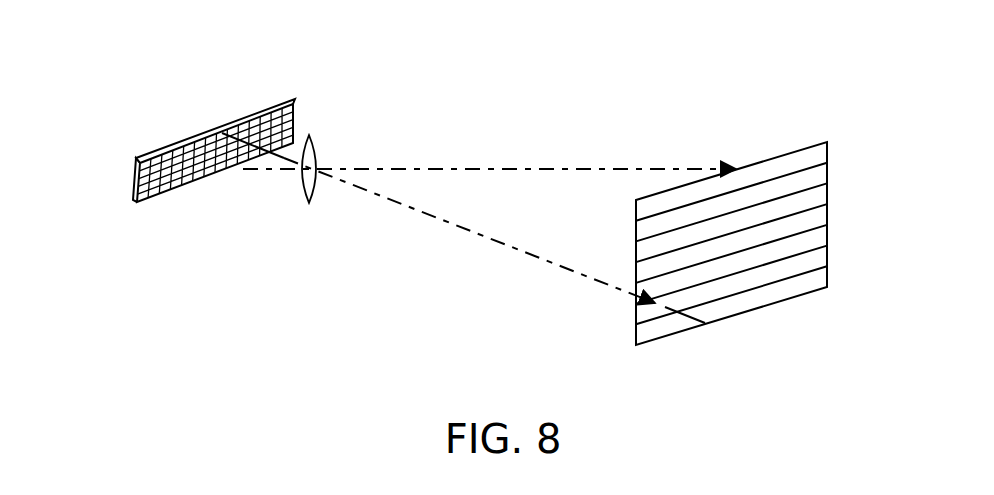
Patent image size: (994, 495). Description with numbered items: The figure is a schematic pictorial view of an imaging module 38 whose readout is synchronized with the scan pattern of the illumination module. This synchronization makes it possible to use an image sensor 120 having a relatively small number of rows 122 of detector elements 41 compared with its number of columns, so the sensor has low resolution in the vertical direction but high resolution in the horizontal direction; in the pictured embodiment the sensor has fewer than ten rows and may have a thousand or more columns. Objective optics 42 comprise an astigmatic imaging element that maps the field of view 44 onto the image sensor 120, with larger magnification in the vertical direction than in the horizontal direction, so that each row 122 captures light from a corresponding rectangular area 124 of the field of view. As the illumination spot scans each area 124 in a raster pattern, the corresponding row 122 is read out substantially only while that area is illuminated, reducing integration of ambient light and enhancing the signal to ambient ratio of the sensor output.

The imaging module 38 is at (186, 76).
The image sensor 120 is at (258, 110).
The rows 122 is at (133, 186).
The detector elements 41 is at (297, 109).
The objective optics 42 is at (317, 194).
The field of view 44 is at (557, 169).
The rectangular area 124 is at (828, 145).